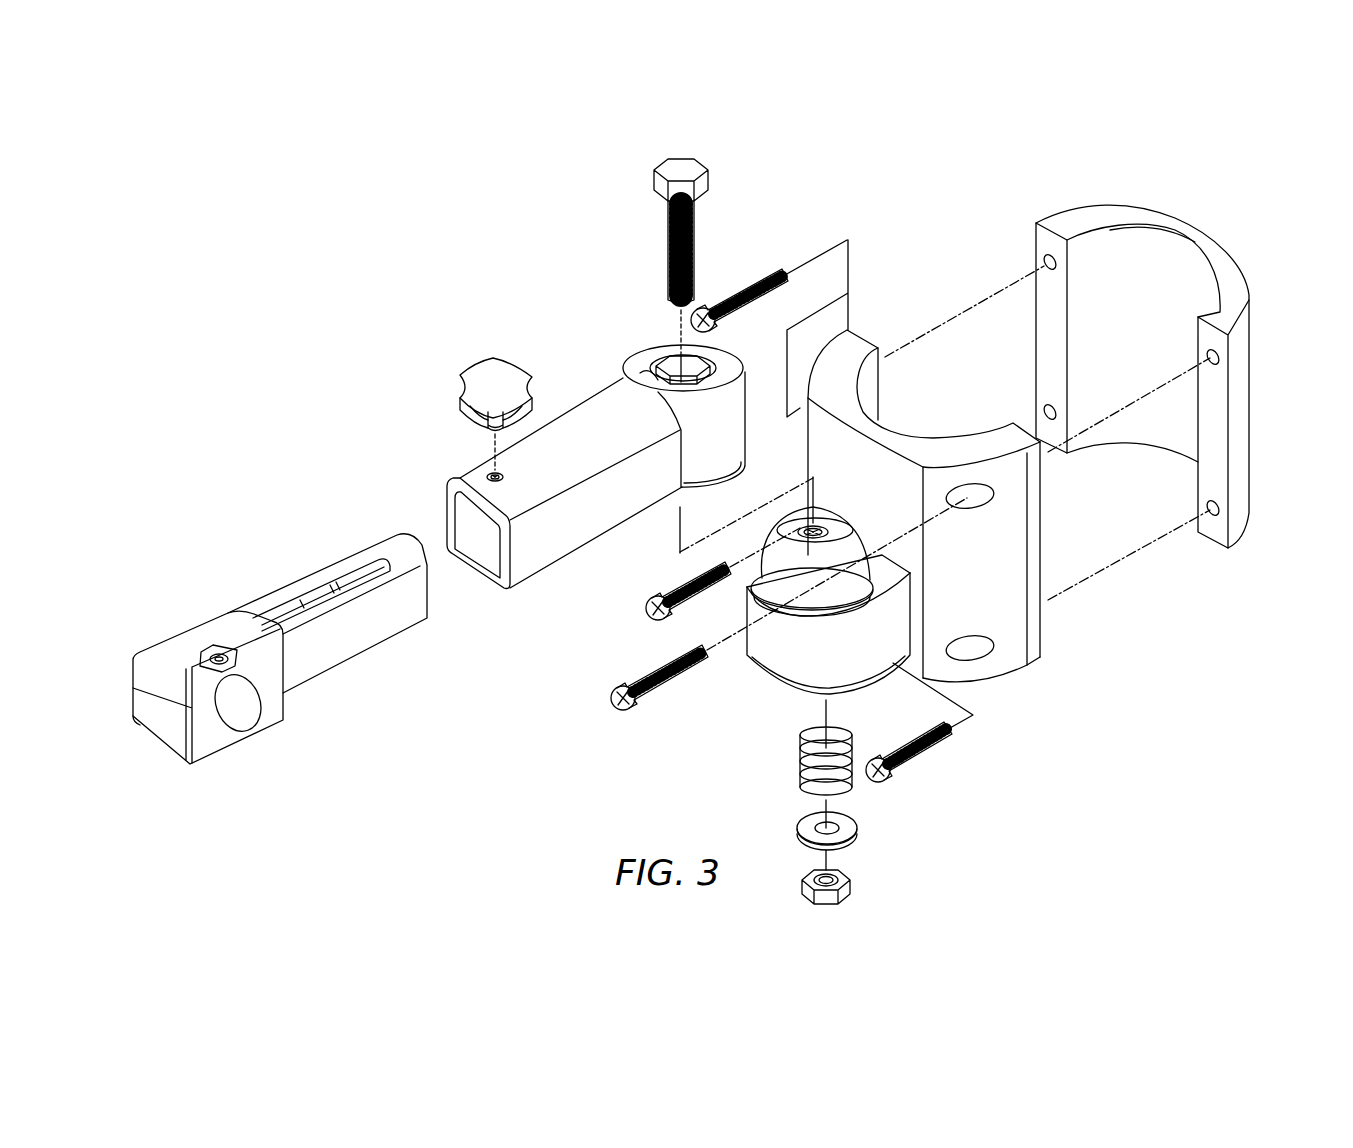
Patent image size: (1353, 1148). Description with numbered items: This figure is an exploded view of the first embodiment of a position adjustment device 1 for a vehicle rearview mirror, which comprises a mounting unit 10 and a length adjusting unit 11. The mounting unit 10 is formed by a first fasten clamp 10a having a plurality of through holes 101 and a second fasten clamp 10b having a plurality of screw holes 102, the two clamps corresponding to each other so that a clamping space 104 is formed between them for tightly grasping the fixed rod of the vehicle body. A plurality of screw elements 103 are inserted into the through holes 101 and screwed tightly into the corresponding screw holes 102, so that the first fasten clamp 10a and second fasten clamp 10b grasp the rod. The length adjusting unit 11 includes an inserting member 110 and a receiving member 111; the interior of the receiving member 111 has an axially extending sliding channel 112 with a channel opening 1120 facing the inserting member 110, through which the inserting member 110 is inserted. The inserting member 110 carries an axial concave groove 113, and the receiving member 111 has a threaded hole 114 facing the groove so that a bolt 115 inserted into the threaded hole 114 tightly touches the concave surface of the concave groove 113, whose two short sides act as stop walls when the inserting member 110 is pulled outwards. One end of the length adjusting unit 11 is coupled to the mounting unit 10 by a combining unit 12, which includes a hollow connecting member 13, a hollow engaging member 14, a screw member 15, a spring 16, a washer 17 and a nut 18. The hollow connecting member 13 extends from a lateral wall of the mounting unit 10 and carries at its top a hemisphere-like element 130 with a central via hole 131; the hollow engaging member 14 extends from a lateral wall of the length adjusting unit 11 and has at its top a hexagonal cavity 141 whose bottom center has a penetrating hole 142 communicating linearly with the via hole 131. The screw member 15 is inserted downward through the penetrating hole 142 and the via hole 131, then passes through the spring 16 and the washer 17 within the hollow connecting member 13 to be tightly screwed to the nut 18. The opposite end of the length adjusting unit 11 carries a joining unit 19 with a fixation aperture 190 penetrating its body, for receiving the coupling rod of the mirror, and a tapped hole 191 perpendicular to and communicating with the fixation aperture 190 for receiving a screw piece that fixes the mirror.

The position adjustment device 1 is at (498, 752).
The mounting unit 10 is at (1039, 458).
The first fasten clamp 10a is at (922, 529).
The second fasten clamp 10b is at (1144, 388).
The through holes 101 is at (965, 497).
The screw holes 102 is at (1046, 260).
The screw elements 103 is at (753, 280).
The clamping space 104 is at (1150, 290).
The length adjusting unit 11 is at (566, 465).
The inserting member 110 is at (327, 619).
The receiving member 111 is at (523, 505).
The sliding channel 112 is at (437, 555).
The channel opening 1120 is at (470, 513).
The concave groove 113 is at (315, 597).
The threaded hole 114 is at (491, 474).
The bolt 115 is at (487, 373).
The combining unit 12 is at (724, 606).
The hollow connecting member 13 is at (777, 665).
The hemisphere-like element 130 is at (780, 551).
The via hole 131 is at (803, 522).
The hollow engaging member 14 is at (704, 392).
The hexagonal cavity 141 is at (672, 375).
The penetrating hole 142 is at (701, 359).
The screw member 15 is at (670, 250).
The spring 16 is at (800, 772).
The washer 17 is at (847, 833).
The nut 18 is at (843, 882).
The joining unit 19 is at (235, 702).
The fixation aperture 190 is at (240, 704).
The tapped hole 191 is at (220, 656).